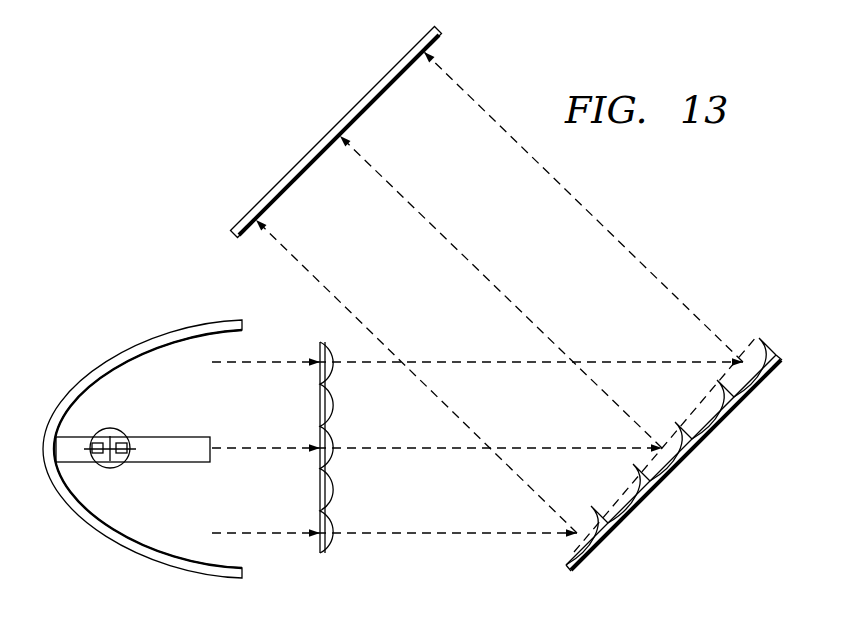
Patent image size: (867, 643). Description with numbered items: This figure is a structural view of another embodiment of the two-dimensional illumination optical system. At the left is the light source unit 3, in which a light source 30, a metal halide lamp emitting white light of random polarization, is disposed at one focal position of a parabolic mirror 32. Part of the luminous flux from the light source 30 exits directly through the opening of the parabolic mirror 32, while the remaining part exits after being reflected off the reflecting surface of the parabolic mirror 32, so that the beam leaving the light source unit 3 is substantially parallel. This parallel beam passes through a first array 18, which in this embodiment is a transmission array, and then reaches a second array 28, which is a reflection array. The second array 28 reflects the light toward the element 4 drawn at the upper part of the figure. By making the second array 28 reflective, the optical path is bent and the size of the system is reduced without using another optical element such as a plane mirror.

The light source unit 3 is at (142, 433).
The reflecting mirror 4 is at (285, 135).
The first array 18 is at (323, 566).
The second array 28 is at (680, 487).
The light source 30 is at (113, 468).
The parabolic mirror 32 is at (122, 363).